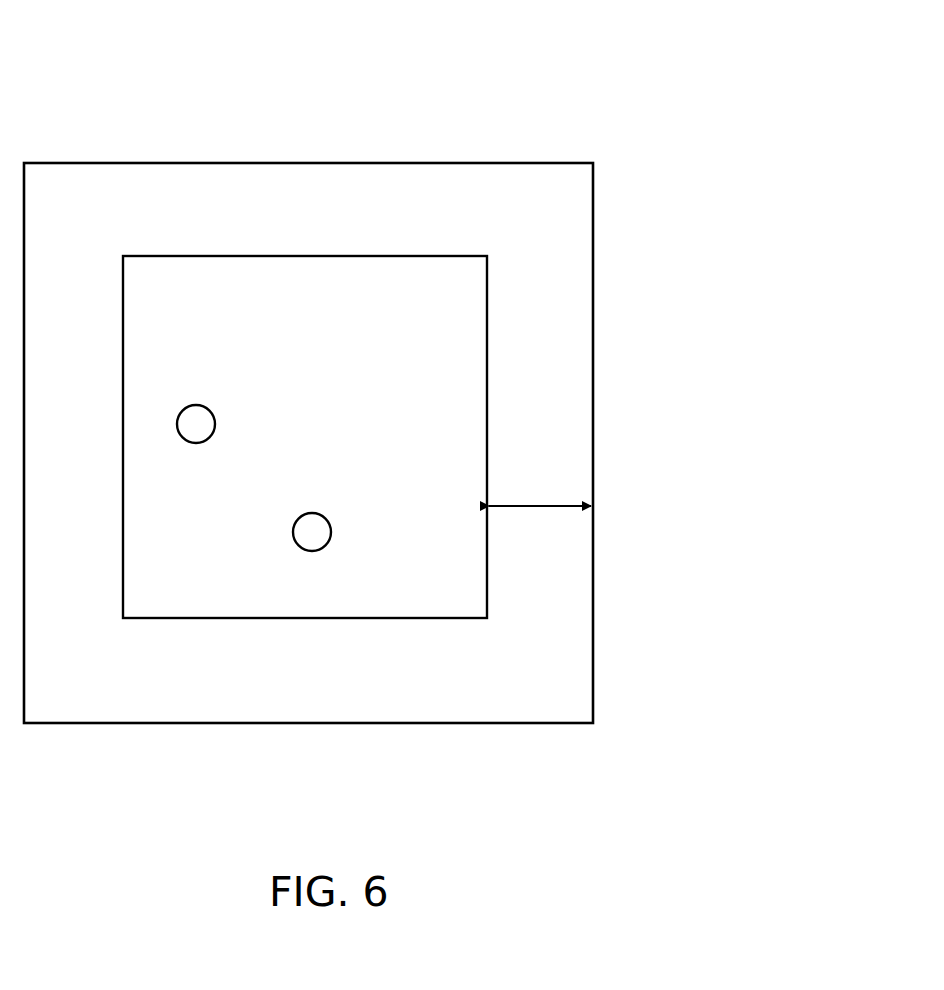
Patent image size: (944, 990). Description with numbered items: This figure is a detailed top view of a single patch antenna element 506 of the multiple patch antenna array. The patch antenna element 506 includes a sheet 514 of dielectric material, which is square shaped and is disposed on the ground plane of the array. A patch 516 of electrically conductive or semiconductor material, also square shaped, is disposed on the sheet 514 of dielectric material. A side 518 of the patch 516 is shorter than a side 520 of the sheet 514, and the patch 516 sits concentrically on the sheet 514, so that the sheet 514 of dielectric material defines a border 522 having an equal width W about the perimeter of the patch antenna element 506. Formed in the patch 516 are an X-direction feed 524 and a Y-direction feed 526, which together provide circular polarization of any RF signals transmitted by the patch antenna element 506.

The patch antenna element 506 is at (388, 128).
The sheet of dielectric material 514 is at (513, 163).
The patch 516 is at (442, 256).
The side of patch 518 is at (246, 621).
The side of sheet of dielectric material 520 is at (171, 725).
The border 522 is at (563, 558).
The X-direction feed 524 is at (216, 424).
The Y-direction feed 526 is at (332, 532).